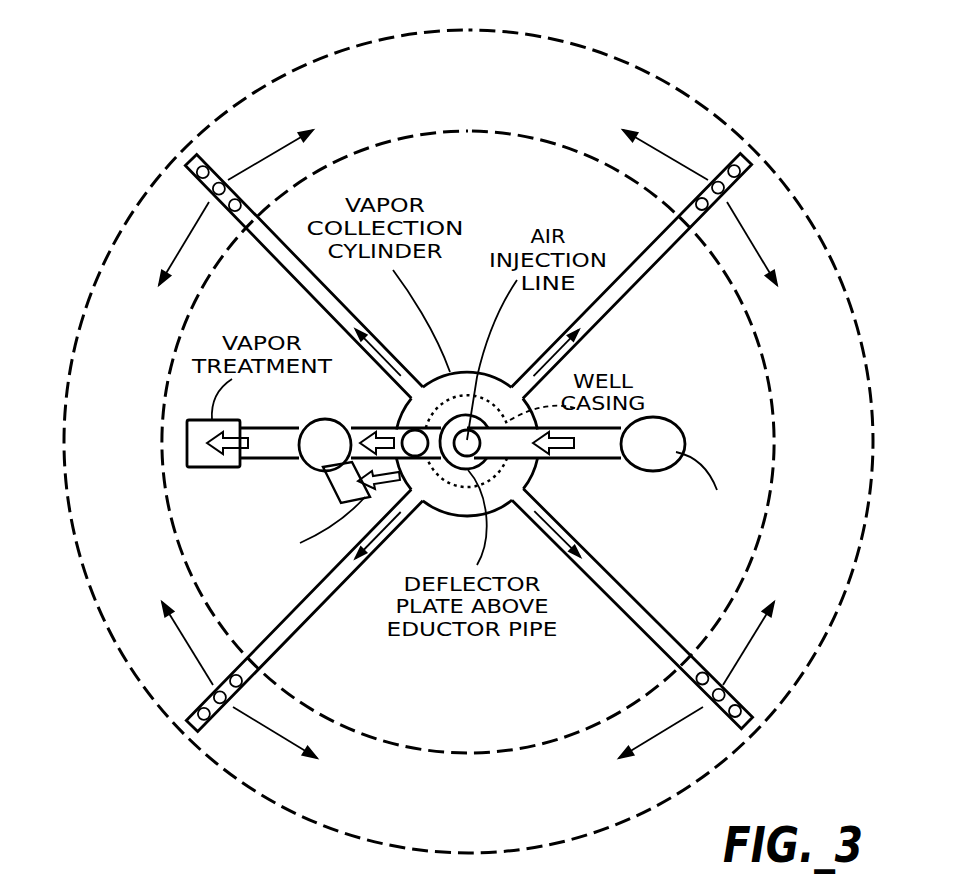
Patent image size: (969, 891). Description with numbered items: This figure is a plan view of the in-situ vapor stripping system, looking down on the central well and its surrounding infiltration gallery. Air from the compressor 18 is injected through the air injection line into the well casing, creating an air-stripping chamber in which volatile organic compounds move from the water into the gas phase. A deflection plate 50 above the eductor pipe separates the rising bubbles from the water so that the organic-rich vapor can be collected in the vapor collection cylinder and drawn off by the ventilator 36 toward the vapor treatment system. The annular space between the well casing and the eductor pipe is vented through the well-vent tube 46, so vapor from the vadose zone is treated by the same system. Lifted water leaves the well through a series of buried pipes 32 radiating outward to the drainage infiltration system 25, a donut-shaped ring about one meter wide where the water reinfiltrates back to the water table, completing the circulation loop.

The drainage infiltration system 25 is at (820, 340).
The compressor 18 is at (657, 419).
The buried pipes 32 is at (632, 597).
The ventilator 36 is at (328, 419).
The well-vent tube 46 is at (325, 488).
The deflection plate 50 is at (463, 470).